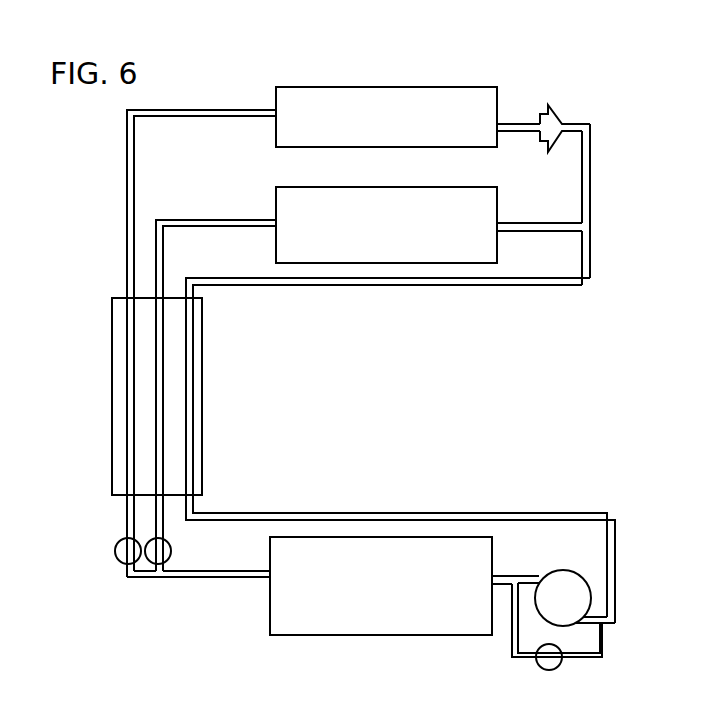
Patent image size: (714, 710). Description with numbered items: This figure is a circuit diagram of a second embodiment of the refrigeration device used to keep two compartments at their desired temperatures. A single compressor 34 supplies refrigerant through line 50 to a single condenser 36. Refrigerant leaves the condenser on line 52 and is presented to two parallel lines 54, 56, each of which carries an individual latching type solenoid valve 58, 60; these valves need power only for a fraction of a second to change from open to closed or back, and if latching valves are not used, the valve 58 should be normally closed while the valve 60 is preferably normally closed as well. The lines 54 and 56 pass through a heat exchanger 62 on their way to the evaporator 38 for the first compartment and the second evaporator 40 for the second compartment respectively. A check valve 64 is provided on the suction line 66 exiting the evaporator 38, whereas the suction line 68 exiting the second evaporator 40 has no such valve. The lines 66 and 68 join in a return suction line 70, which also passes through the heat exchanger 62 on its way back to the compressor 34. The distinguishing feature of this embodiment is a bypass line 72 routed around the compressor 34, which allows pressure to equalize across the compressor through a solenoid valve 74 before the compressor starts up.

The compressor 34 is at (585, 590).
The condenser 36 is at (356, 628).
The evaporator 38 is at (432, 97).
The second evaporator 40 is at (487, 212).
The line 50 is at (498, 576).
The line 52 is at (222, 578).
The parallel line 54 is at (127, 181).
The parallel line 56 is at (164, 258).
The latching type solenoid valve 58 is at (115, 551).
The latching type solenoid valve 60 is at (171, 551).
The heat exchanger 62 is at (203, 373).
The check valve 64 is at (560, 118).
The suction line 66 is at (515, 120).
The suction line 68 is at (545, 232).
The return suction line 70 is at (590, 262).
The bypass line 72 is at (604, 641).
The solenoid valve 74 is at (560, 667).